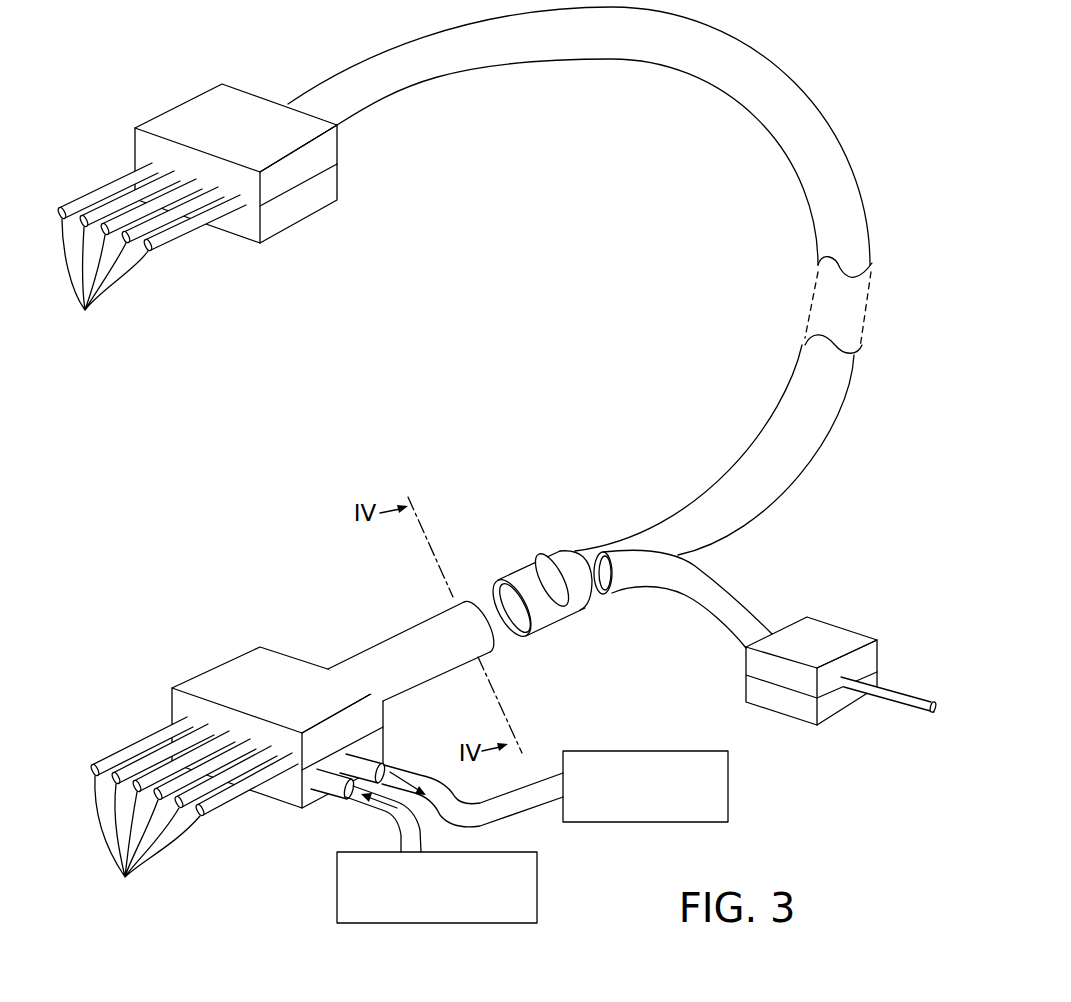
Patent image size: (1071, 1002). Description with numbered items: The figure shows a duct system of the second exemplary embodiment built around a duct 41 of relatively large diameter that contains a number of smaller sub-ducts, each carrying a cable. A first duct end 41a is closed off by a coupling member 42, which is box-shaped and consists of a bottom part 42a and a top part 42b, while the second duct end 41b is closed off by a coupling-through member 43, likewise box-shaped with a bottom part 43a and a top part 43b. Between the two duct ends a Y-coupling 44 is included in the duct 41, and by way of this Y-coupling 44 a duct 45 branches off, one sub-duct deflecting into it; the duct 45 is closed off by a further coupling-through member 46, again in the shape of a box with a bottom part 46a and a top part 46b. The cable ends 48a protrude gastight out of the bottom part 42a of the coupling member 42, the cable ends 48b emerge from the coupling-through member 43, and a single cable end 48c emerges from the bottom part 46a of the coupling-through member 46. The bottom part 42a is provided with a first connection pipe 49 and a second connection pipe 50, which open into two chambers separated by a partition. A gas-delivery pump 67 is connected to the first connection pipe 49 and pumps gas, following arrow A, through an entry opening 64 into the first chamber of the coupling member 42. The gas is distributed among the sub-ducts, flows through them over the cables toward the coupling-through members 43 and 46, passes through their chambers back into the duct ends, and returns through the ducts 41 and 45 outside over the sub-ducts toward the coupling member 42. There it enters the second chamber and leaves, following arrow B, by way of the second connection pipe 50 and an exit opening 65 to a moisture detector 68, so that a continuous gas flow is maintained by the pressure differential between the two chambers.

The duct 41 is at (713, 468).
The first duct end 41a is at (357, 656).
The second duct end 41b is at (297, 93).
The coupling member 42 is at (212, 652).
The bottom part 42a is at (385, 732).
The top part 42b is at (385, 700).
The coupling-through member 43 is at (128, 113).
The bottom part 43a is at (338, 190).
The top part 43b is at (338, 143).
The Y-coupling 44 is at (550, 617).
The duct 45 is at (737, 594).
The coupling-through member 46 is at (858, 614).
The bottom part 46a is at (746, 694).
The top part 46b is at (745, 665).
The cable end 48a is at (194, 811).
The cable ends 48b is at (151, 250).
The cable end 48c is at (897, 700).
The first connection pipe 49 is at (327, 783).
The second connection pipe 50 is at (355, 762).
The entry opening 64 is at (350, 784).
The exit opening 65 is at (385, 766).
The gas-delivery pump 67 is at (337, 912).
The moisture detector 68 is at (728, 800).